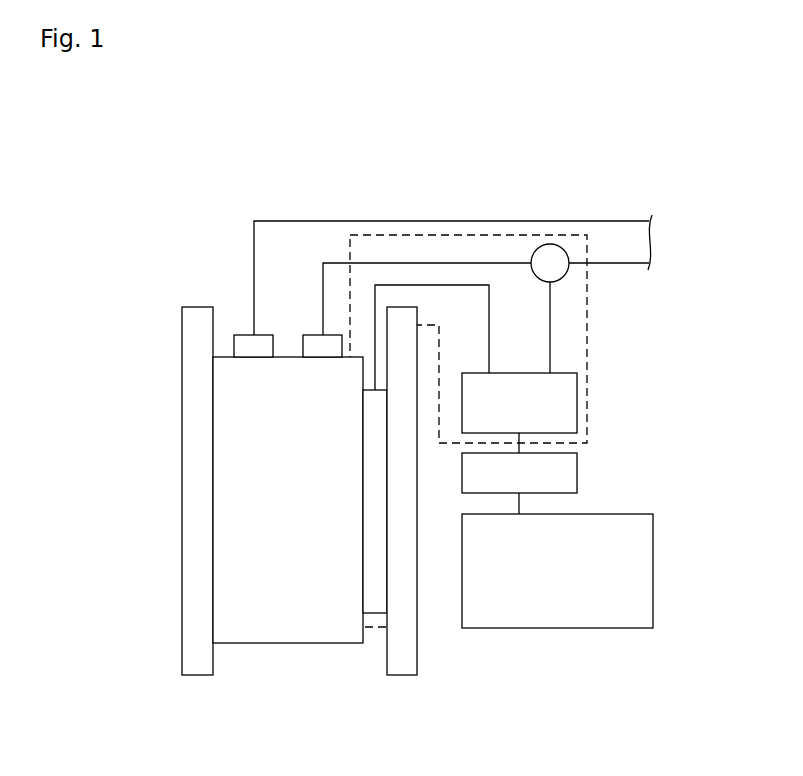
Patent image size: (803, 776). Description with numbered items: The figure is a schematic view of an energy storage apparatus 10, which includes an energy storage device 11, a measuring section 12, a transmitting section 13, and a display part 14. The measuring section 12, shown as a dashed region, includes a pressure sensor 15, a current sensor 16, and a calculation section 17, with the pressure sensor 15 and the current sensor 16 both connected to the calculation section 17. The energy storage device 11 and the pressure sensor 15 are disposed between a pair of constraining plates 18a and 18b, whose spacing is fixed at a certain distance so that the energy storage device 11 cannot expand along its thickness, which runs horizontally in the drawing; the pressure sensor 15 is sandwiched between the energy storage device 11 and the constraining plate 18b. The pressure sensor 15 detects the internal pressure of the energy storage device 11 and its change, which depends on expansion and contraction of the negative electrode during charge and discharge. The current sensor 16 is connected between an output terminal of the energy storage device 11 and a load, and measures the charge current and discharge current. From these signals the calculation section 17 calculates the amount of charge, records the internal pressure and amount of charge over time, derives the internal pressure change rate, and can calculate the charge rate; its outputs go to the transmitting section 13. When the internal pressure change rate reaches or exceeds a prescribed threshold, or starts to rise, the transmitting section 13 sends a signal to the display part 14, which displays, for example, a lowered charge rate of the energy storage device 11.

The energy storage apparatus 10 is at (615, 147).
The energy storage device 11 is at (288, 645).
The measuring section 12 is at (480, 234).
The transmitting section 13 is at (577, 473).
The display part 14 is at (653, 572).
The pressure sensor 15 is at (375, 615).
The current sensor 16 is at (563, 278).
The calculation section 17 is at (577, 403).
The constraining plate 18a is at (202, 677).
The constraining plate 18b is at (402, 677).